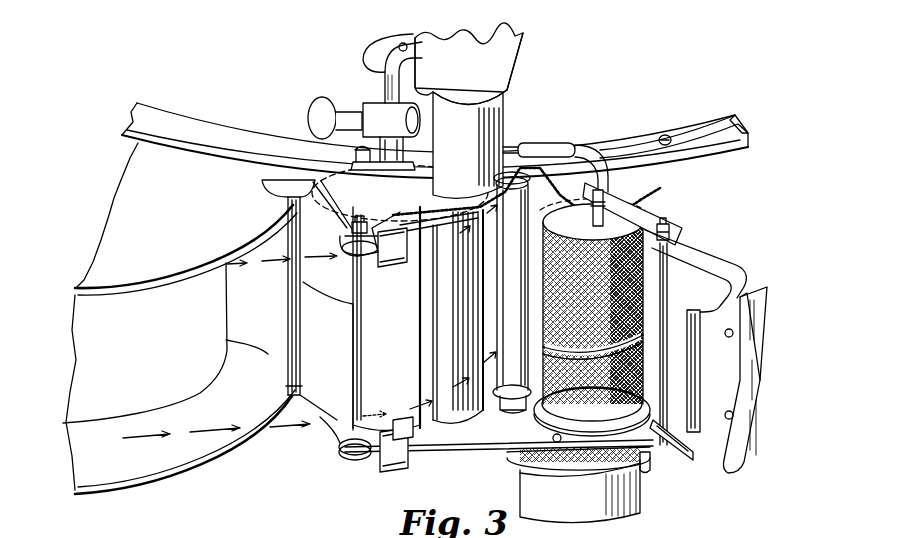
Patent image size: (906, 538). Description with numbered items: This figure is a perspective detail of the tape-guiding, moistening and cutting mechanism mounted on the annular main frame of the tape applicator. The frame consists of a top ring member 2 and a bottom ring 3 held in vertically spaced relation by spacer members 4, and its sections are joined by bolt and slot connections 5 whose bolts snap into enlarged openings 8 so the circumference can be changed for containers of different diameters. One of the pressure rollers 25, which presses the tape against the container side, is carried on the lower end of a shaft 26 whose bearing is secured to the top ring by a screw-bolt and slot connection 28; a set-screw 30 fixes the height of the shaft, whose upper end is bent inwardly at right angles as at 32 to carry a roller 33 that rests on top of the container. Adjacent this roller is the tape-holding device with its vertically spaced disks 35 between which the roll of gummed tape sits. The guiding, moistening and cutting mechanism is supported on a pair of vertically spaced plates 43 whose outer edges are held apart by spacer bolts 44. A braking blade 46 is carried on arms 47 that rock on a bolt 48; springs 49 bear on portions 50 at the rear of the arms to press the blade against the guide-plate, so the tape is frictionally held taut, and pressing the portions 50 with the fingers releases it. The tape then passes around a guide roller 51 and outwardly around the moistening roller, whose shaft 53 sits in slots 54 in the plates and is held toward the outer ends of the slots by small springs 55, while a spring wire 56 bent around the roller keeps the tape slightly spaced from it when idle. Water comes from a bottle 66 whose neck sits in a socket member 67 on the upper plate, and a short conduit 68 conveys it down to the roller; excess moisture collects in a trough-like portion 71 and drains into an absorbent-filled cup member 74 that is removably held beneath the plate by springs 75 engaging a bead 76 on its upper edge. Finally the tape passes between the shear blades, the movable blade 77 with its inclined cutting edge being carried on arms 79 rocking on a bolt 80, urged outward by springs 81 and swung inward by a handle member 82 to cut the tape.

The top ring member 2 is at (435, 134).
The bottom ring 3 is at (670, 382).
The spacer members 4 is at (287, 297).
The bolt and slot connections 5 is at (701, 136).
The enlarged openings 8 is at (667, 135).
The pressure roller 25 is at (293, 393).
The shaft 26 is at (393, 92).
The screw-bolt and slot connection 28 is at (347, 156).
The set-screw 30 is at (323, 108).
The inwardly bent upper end 32 is at (399, 47).
The roller 33 is at (377, 70).
The disks 35 is at (160, 282).
The plates 43 is at (303, 203).
The spacer bolts 44 is at (551, 438).
The blade 46 is at (453, 400).
The arms 47 is at (410, 248).
The bolt 48 is at (420, 374).
The springs 49 is at (353, 451).
The portions 50 is at (400, 452).
The guide roller 51 is at (517, 270).
The shaft 53 is at (606, 190).
The slots 54 is at (622, 204).
The small springs 55 is at (580, 192).
The spring wire 56 is at (547, 338).
The bottle 66 is at (483, 111).
The socket member 67 is at (480, 121).
The short conduit 68 is at (596, 163).
The trough-like portion 71 is at (538, 410).
The cup member 74 is at (604, 506).
The springs 75 is at (644, 463).
The bead 76 is at (534, 463).
The blade 77 is at (768, 292).
The arms 79 is at (700, 261).
The bolt 80 is at (664, 296).
The springs 81 is at (688, 431).
The handle member 82 is at (690, 364).